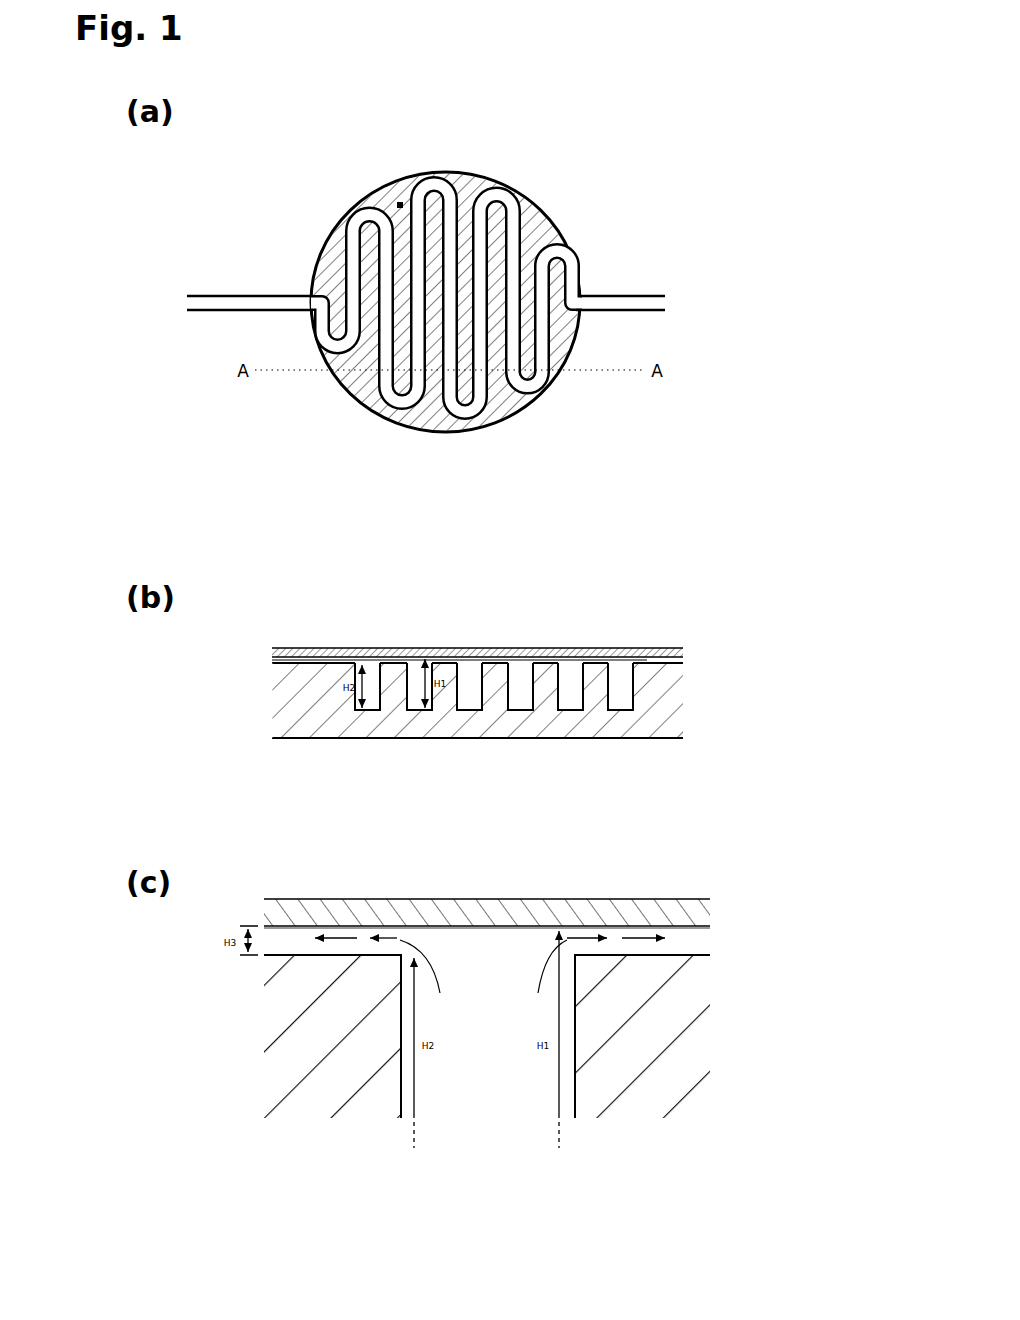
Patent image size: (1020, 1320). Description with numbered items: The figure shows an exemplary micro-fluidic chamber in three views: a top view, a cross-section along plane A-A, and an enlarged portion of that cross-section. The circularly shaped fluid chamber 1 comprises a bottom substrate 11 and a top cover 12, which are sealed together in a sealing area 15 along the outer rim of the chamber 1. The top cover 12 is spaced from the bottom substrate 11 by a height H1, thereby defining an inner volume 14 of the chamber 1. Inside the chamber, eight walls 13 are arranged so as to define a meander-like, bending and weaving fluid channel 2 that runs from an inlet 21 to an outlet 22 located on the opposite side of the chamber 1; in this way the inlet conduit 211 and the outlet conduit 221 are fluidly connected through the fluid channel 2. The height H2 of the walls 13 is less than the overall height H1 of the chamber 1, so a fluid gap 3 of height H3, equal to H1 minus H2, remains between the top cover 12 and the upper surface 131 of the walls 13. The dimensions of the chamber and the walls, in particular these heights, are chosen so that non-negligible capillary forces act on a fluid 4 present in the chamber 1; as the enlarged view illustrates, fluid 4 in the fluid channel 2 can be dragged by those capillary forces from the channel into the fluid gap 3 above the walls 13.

The fluid chamber 1 is at (572, 180).
The fluid channel 2 is at (440, 176).
The fluid gap 3 is at (399, 202).
The fluid 4 is at (490, 965).
The bottom substrate 11 is at (412, 740).
The top cover 12 is at (397, 650).
The walls 13 is at (473, 432).
The inner volume 14 is at (398, 428).
The sealing area 15 is at (276, 662).
The inlet 21 is at (312, 292).
The outlet 22 is at (605, 296).
The upper surface 131 is at (450, 660).
The inlet conduit 211 is at (222, 296).
The outlet conduit 221 is at (648, 296).